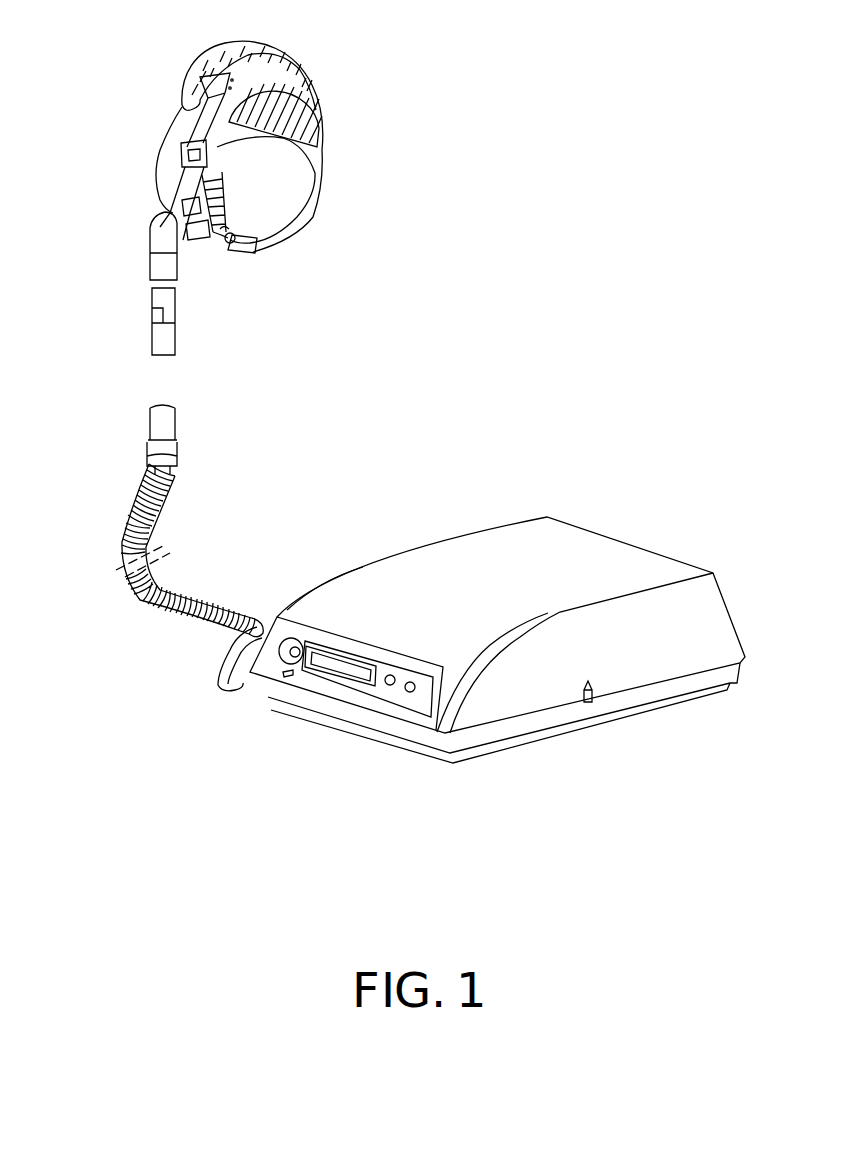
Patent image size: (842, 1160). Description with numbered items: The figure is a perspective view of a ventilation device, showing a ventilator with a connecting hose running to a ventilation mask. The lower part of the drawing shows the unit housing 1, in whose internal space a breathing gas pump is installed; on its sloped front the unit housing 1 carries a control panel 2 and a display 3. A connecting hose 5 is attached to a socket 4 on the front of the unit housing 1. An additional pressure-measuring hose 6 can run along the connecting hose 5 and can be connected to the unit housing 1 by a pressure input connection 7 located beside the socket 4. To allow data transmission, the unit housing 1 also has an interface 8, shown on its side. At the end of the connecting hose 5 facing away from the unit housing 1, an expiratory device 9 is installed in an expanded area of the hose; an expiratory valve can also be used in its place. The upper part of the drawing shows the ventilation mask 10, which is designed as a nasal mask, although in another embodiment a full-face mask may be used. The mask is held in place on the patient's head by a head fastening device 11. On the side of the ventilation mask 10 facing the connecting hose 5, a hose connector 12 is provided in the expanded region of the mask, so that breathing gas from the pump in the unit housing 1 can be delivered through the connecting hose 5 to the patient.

The unit housing 1 is at (518, 540).
The control panel 2 is at (397, 695).
The display 3 is at (340, 663).
The socket 4 is at (293, 652).
The connecting hose 5 is at (140, 499).
The pressure-measuring hose 6 is at (222, 678).
The pressure input connection 7 is at (283, 673).
The interface 8 is at (588, 705).
The expiratory device 9 is at (209, 316).
The ventilation mask 10 is at (165, 211).
The head fastening device 11 is at (186, 93).
The hose connector 12 is at (157, 238).